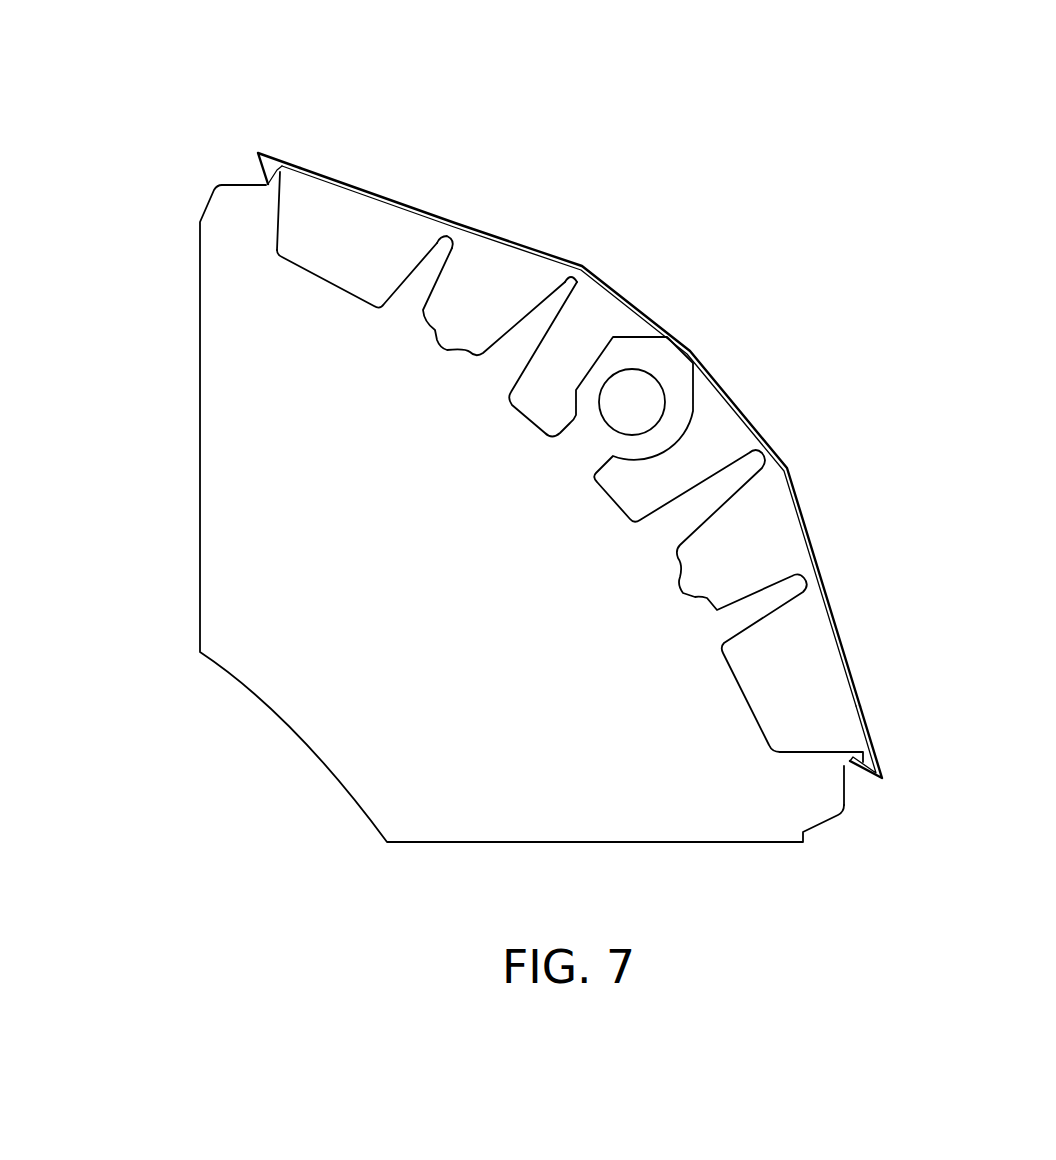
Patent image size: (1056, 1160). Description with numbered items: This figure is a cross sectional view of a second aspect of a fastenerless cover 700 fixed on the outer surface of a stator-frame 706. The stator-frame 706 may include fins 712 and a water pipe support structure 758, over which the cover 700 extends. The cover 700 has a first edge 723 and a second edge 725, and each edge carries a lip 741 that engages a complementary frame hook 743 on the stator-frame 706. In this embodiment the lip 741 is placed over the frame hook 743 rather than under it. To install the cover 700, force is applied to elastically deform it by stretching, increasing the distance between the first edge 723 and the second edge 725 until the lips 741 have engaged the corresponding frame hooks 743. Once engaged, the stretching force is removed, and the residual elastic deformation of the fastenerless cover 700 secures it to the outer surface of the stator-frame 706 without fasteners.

The fastenerless cover 700 is at (818, 508).
The stator-frame 706 is at (493, 608).
The fins 712 is at (459, 223).
The first edge 723 is at (901, 793).
The second edge 725 is at (232, 141).
The lip 741 is at (237, 177).
The frame hook 743 is at (288, 186).
The water pipe support structure 758 is at (445, 378).